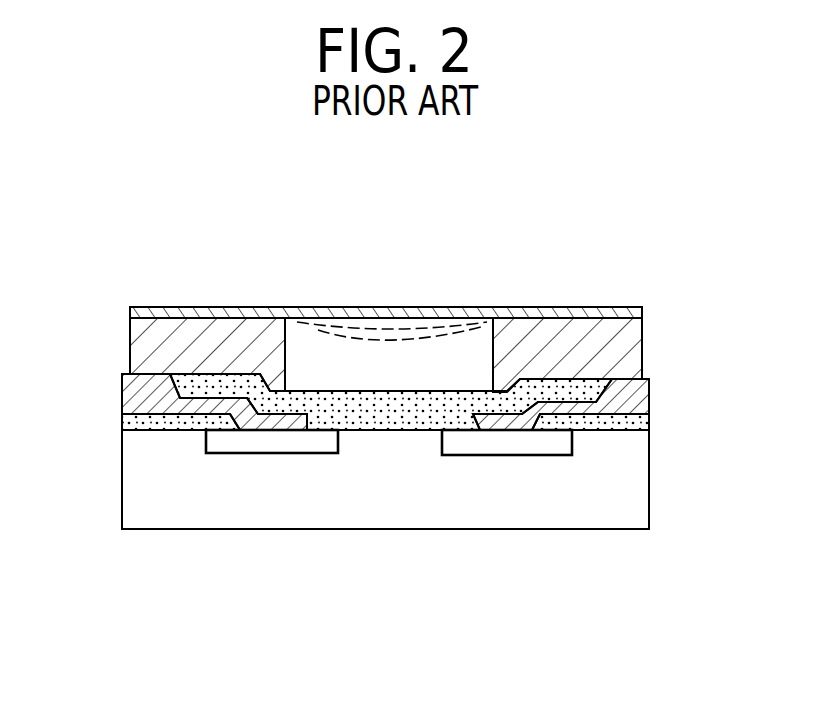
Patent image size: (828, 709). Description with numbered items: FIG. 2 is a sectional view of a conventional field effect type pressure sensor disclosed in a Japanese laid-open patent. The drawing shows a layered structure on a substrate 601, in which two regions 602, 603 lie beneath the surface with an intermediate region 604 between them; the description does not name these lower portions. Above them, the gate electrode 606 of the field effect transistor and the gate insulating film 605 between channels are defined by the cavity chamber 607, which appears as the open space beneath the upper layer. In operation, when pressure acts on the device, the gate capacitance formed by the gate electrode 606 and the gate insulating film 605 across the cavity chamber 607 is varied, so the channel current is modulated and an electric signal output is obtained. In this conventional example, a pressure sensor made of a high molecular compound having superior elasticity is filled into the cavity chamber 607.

The semiconductor substrate 601 is at (607, 502).
The source region 602 is at (243, 440).
The drain region 603 is at (508, 442).
The channel region 604 is at (382, 442).
The gate insulating film 605 is at (522, 345).
The gate electrode 606 is at (500, 308).
The cavity chamber 607 is at (303, 356).